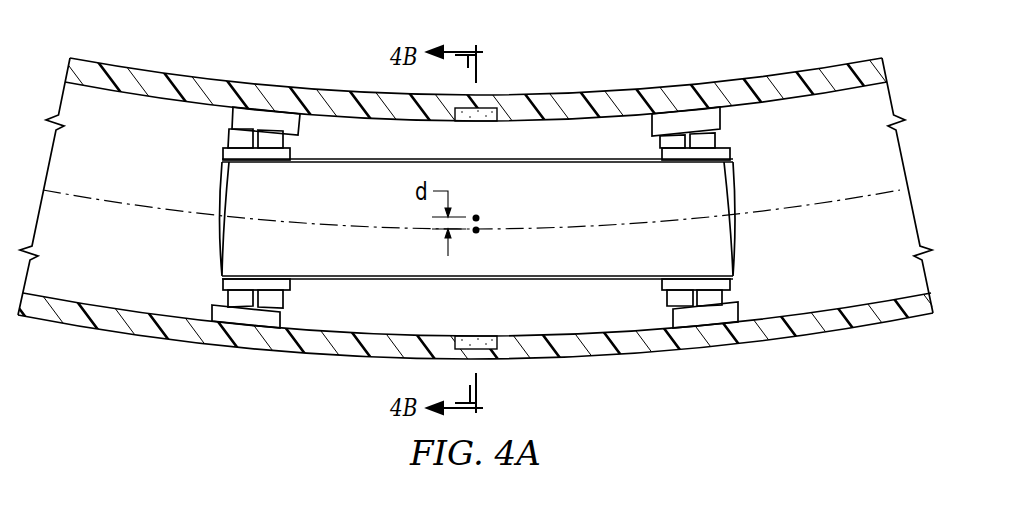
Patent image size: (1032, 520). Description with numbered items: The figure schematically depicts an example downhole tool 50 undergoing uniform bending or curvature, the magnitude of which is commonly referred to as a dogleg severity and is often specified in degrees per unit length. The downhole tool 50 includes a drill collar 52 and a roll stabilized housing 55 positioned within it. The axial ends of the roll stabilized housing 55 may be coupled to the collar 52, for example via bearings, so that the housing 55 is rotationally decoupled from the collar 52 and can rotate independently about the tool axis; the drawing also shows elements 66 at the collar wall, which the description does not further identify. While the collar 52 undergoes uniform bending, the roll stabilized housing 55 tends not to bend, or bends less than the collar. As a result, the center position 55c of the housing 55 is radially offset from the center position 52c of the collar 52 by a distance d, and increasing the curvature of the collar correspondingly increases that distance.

The downhole tool 50 is at (491, 192).
The drill collar 52 is at (491, 206).
The roll stabilized housing 55 is at (643, 193).
The insert 66 is at (487, 108).
The center position of the roll stabilized housing 55c is at (481, 215).
The center position of the collar 52c is at (481, 233).